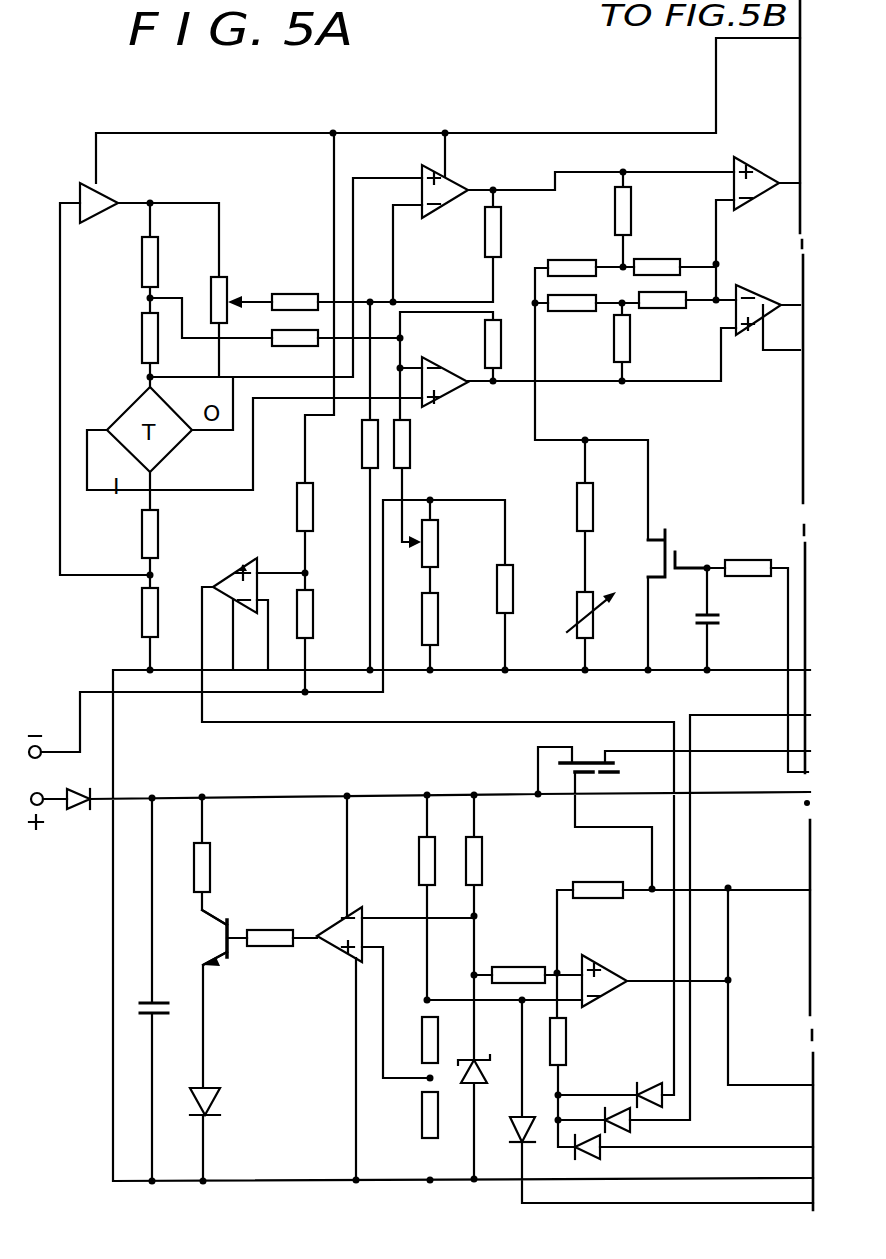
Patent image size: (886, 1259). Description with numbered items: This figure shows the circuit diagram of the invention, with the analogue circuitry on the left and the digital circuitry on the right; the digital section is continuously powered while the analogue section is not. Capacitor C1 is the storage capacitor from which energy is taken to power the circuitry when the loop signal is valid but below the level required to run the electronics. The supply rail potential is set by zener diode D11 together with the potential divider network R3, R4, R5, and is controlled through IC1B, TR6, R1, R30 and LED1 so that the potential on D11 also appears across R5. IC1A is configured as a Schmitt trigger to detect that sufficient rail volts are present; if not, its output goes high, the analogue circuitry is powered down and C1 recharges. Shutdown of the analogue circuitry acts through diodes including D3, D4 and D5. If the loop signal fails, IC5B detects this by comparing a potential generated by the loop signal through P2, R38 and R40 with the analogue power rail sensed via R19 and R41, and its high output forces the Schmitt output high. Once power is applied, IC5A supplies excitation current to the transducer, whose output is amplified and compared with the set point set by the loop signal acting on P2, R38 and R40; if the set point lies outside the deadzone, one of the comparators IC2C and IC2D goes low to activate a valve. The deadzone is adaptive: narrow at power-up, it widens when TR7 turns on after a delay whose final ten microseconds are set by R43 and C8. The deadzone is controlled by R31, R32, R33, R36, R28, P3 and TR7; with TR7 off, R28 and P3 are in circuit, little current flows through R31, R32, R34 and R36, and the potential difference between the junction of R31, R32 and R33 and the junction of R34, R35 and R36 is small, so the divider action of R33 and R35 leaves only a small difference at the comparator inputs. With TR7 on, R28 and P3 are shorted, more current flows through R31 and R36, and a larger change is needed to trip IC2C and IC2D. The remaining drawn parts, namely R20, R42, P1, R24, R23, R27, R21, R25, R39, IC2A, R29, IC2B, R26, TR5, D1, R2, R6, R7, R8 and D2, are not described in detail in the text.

The excitation amplifier IC5A is at (119, 194).
The resistor R20 is at (125, 262).
The resistor R42 is at (125, 338).
The potentiometer P1 is at (241, 308).
The resistor R24 is at (295, 290).
The resistor R23 is at (298, 355).
The resistor R27 is at (177, 534).
The resistor R21 is at (129, 614).
The loop signal comparator IC5B is at (246, 574).
The resistor R19 is at (330, 507).
The resistor R41 is at (330, 614).
The resistor R25 is at (352, 444).
The resistor R39 is at (428, 444).
The operational amplifier IC2A is at (464, 185).
The resistor R29 is at (518, 232).
The operational amplifier IC2B is at (461, 387).
The resistor R26 is at (468, 344).
The deadzone resistor R32 is at (576, 255).
The deadzone resistor R34 is at (573, 317).
The deadzone resistor R31 is at (649, 211).
The potential divider resistor R33 is at (666, 252).
The potential divider resistor R35 is at (669, 315).
The deadzone resistor R36 is at (647, 343).
The comparator IC2D is at (761, 170).
The comparator IC2C is at (762, 297).
The deadzone resistor R28 is at (610, 507).
The deadzone potentiometer P3 is at (596, 618).
The set point potentiometer P2 is at (440, 543).
The set point resistor R40 is at (529, 589).
The set point resistor R38 is at (455, 619).
The deadzone transistor TR7 is at (677, 570).
The timing resistor R43 is at (750, 552).
The timing capacitor C8 is at (724, 622).
The transistor TR5 is at (604, 774).
The diode D1 is at (85, 815).
The rail control resistor R30 is at (228, 867).
The rail control transistor TR6 is at (198, 938).
The base resistor R1 is at (270, 924).
The rail control amplifier IC1B is at (331, 944).
The storage capacitor C1 is at (166, 1024).
The light emitting diode LED1 is at (241, 1102).
The potential divider resistor R3 is at (411, 861).
The resistor R2 is at (491, 861).
The potential divider resistor R4 is at (415, 1040).
The potential divider resistor R5 is at (415, 1115).
The zener diode D11 is at (493, 1058).
The shutdown diode D5 is at (511, 1146).
The resistor R6 is at (518, 961).
The resistor R7 is at (598, 874).
The Schmitt trigger IC1A is at (615, 969).
The resistor R8 is at (577, 1041).
The diode D2 is at (628, 1088).
The shutdown diode D3 is at (599, 1115).
The shutdown diode D4 is at (605, 1155).